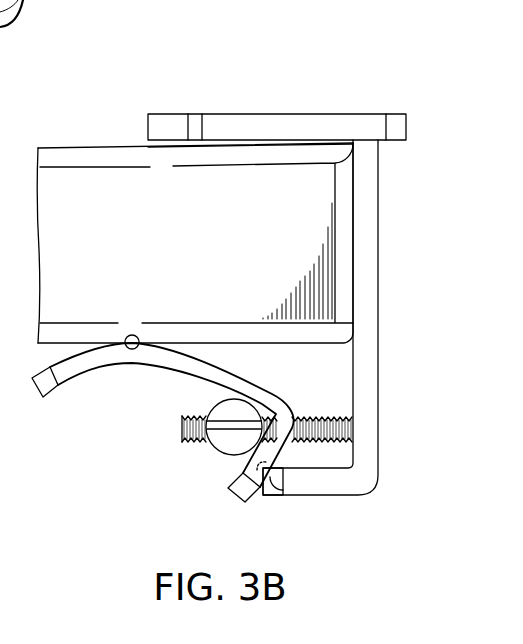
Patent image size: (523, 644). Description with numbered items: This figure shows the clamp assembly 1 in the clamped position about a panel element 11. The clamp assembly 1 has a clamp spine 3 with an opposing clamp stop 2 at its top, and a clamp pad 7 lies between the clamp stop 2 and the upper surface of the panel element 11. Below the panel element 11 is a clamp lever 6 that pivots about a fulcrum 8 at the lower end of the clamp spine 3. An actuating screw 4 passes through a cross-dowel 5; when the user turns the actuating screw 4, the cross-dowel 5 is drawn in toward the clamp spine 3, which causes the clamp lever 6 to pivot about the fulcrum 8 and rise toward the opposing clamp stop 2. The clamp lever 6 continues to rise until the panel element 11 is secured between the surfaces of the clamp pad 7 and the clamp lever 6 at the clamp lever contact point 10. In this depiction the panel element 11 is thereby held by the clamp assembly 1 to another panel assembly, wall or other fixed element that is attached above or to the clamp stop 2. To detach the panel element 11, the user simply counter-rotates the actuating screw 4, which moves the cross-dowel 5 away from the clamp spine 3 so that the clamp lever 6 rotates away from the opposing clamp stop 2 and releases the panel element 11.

The mounting assembly 1 is at (321, 75).
The clamp stop 2 is at (232, 114).
The clamp spine 3 is at (380, 229).
The actuating screw 4 is at (322, 412).
The cross-dowel 5 is at (218, 452).
The clamp lever 6 is at (160, 366).
The clamp pad 7 is at (173, 149).
The fulcrum 8 is at (275, 496).
The clamp lever contact point 10 is at (131, 335).
The panel element 11 is at (90, 147).